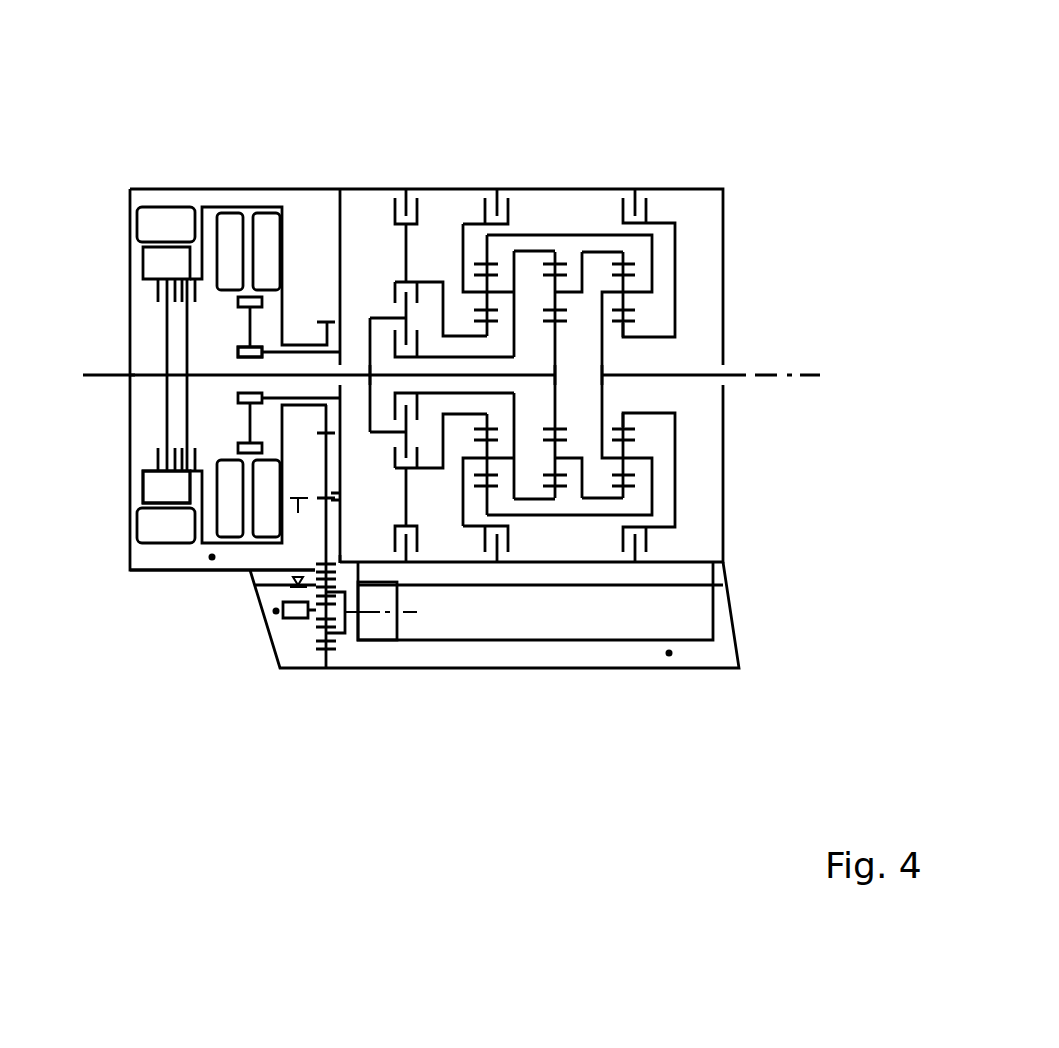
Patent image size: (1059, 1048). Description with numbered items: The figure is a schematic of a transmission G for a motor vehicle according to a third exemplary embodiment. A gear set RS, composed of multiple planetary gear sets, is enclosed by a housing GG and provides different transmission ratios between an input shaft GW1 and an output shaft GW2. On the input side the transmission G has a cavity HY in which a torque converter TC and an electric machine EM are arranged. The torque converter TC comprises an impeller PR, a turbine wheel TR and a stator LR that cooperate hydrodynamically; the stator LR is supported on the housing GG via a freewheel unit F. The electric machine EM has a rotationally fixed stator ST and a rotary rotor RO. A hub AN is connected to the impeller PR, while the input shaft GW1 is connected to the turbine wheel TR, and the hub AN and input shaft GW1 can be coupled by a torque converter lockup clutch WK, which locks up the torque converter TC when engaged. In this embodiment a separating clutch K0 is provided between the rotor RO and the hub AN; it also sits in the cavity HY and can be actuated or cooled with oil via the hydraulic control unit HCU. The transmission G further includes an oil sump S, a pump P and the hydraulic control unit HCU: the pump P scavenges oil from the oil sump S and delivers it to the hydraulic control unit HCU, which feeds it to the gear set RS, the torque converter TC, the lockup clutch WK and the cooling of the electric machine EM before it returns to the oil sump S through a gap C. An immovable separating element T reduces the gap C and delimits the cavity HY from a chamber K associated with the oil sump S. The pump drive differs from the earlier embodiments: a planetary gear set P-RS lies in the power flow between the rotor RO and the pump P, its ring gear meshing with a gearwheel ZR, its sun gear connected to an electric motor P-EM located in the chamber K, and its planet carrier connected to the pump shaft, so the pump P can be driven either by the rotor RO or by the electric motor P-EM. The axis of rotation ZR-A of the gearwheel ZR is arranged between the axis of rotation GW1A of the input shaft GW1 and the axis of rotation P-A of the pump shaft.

The transmission G is at (770, 125).
The electric machine EM is at (114, 273).
The rotor RO is at (157, 265).
The stator ST is at (167, 223).
The torque converter TC is at (214, 283).
The turbine wheel TR is at (227, 227).
The impeller PR is at (268, 227).
The stator LR is at (262, 303).
The housing GG is at (442, 188).
The gear set RS is at (568, 176).
The output shaft GW2 is at (735, 373).
The axis of rotation of the input shaft GW1A is at (775, 373).
The torque converter lockup clutch WK is at (181, 309).
The freewheel unit F is at (238, 351).
The hub AN is at (123, 377).
The input shaft GW1 is at (237, 375).
The separating clutch K0 is at (148, 462).
The gearwheel ZR is at (322, 470).
The cavity HY is at (298, 513).
The axis of rotation of the gearwheel ZR-A is at (212, 557).
The separating element T is at (277, 611).
The chamber K is at (313, 568).
The planetary gear set P-RS is at (338, 654).
The axis of rotation of the pump shaft P-A is at (407, 612).
The gap C is at (346, 557).
The oil sump S is at (669, 653).
The hydraulic control unit HCU is at (692, 612).
The electric motor P-EM is at (295, 618).
The pump P is at (377, 628).